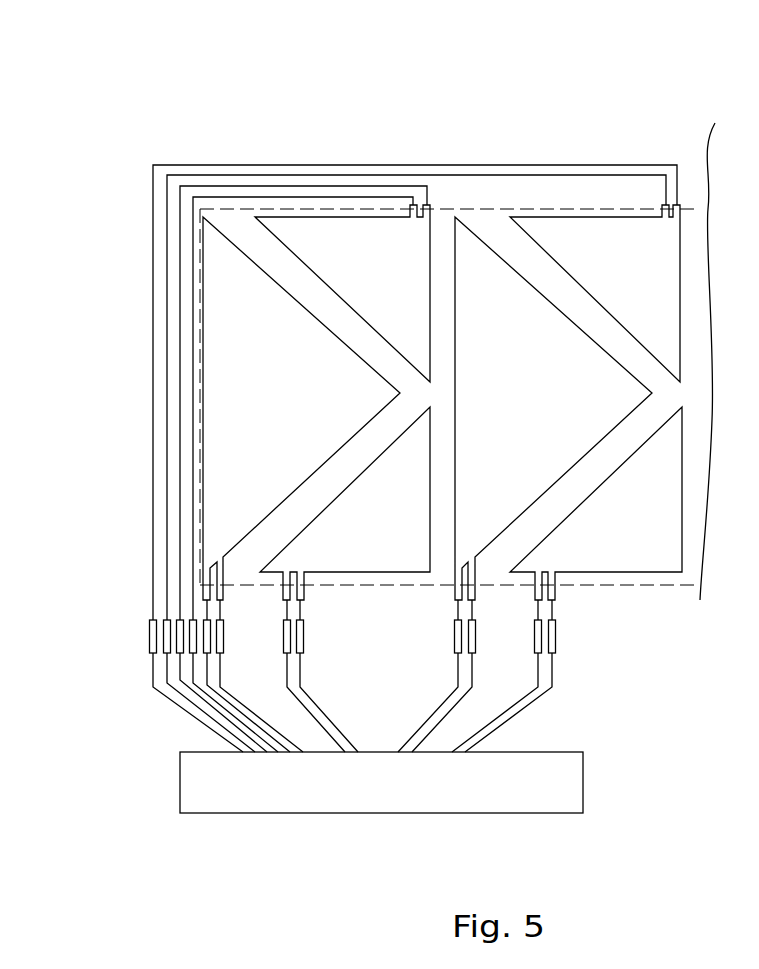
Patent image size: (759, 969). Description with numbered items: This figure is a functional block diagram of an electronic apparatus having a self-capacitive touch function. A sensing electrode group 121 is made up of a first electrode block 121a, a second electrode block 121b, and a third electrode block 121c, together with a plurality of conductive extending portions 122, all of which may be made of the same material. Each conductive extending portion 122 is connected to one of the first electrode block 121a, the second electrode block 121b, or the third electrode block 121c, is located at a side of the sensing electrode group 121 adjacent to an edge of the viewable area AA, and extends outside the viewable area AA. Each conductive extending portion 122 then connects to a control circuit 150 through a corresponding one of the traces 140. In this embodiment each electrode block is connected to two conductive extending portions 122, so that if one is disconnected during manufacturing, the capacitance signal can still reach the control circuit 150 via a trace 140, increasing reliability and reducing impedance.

The sensing electrode group 121 is at (316, 315).
The first electrode block 121a is at (244, 272).
The second electrode block 121b is at (353, 243).
The third electrode block 121c is at (408, 460).
The conductive extending portion 122 is at (303, 592).
The trace 140 is at (153, 390).
The control circuit 150 is at (583, 780).
The viewable area AA is at (466, 348).